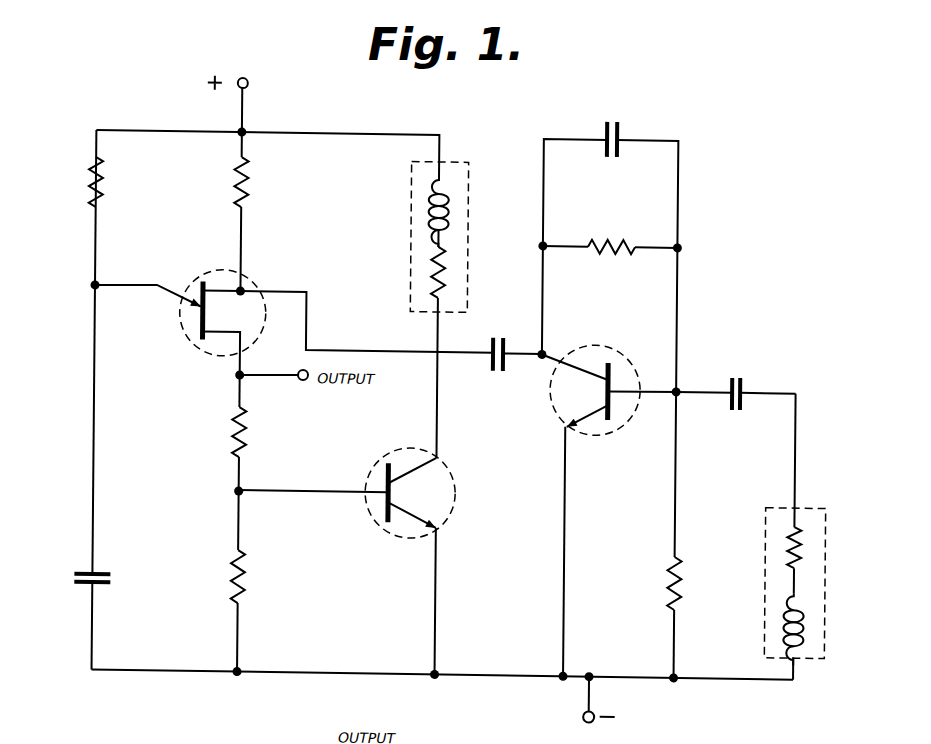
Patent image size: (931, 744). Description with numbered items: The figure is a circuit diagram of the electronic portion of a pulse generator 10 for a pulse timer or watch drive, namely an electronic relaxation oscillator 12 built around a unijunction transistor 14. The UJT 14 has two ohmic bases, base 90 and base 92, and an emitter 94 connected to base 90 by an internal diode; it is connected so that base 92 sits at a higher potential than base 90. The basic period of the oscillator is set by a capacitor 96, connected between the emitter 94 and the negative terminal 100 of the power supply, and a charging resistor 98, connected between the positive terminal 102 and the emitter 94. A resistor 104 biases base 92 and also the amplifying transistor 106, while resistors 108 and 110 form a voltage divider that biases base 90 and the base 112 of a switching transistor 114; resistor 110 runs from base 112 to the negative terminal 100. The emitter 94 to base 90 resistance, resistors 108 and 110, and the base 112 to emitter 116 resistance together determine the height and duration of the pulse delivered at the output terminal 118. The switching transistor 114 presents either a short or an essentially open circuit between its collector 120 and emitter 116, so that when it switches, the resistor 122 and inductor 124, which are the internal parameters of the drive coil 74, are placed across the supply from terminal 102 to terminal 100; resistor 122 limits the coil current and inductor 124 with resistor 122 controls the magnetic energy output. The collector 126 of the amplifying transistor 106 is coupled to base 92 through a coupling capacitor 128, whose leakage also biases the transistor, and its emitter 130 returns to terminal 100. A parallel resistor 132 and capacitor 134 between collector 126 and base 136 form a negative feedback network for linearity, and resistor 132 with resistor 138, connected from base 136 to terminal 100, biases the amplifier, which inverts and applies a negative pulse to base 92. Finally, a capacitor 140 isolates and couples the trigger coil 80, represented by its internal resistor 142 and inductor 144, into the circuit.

The pulse generator 10 is at (474, 153).
The electronic relaxation oscillator 12 is at (328, 158).
The unijunction transistor 14 is at (294, 312).
The drive coil 74 is at (431, 237).
The trigger coil 80 is at (776, 566).
The base 1 of unijunction transistor 90 is at (222, 340).
The base 2 of unijunction transistor 92 is at (198, 280).
The emitter of unijunction transistor 94 is at (185, 302).
The capacitor 96 is at (86, 592).
The charging resistor 98 is at (101, 186).
The negative terminal 100 is at (586, 716).
The positive terminal 102 is at (241, 81).
The resistor 104 is at (250, 186).
The amplifying transistor 106 is at (608, 404).
The resistor 108 is at (236, 436).
The resistor 110 is at (234, 582).
The base of switching transistor 112 is at (354, 495).
The switching transistor 114 is at (450, 503).
The emitter of switching transistor 116 is at (410, 528).
The output terminal 118 is at (302, 383).
The collector of switching transistor 120 is at (372, 494).
The resistor 122 is at (432, 278).
The inductor 124 is at (428, 200).
The collector of amplifying transistor 126 is at (540, 362).
The coupling capacitor 128 is at (505, 333).
The emitter of amplifying transistor 130 is at (597, 412).
The resistor 132 is at (612, 242).
The capacitor 134 is at (618, 130).
The base of amplifying transistor 136 is at (618, 364).
The resistor 138 is at (669, 600).
The capacitor 140 is at (744, 380).
The resistor 142 is at (790, 537).
The inductor 144 is at (788, 622).